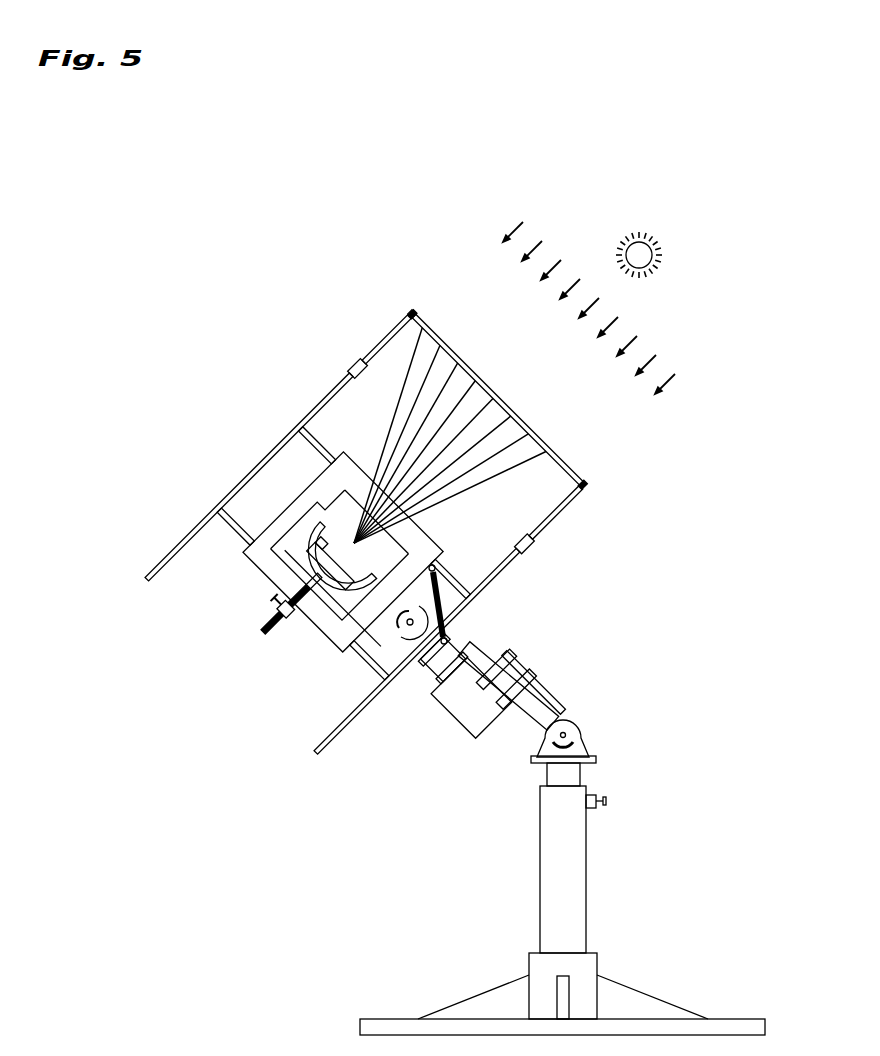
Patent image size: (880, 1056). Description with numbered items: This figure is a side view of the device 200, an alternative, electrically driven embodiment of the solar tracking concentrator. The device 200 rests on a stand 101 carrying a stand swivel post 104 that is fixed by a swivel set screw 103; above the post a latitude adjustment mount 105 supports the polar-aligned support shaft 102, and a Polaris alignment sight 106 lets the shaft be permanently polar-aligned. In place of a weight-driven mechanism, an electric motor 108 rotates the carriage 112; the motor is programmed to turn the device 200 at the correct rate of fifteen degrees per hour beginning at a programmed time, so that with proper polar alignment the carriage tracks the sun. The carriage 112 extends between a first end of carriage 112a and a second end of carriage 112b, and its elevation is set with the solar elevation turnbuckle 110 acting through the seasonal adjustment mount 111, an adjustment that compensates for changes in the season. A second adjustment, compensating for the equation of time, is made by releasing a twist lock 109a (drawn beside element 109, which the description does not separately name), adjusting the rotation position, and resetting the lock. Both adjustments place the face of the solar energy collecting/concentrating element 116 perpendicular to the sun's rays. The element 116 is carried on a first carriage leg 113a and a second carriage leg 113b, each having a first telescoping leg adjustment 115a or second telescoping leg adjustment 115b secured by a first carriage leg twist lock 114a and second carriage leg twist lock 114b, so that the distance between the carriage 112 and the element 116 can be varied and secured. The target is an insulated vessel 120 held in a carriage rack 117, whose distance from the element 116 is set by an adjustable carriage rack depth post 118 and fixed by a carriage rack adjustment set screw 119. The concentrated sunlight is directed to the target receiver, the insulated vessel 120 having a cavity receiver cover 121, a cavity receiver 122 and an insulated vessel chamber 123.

The device 200 is at (260, 275).
The stand 101 is at (571, 850).
The polar-aligned support shaft 102 is at (527, 722).
The swivel set screw 103 is at (603, 795).
The stand swivel post 104 is at (545, 775).
The latitude adjustment mount 105 is at (583, 742).
The Polaris alignment sight 106 is at (527, 667).
The motor 108 is at (473, 738).
The hinge 109 is at (393, 677).
The twist lock 109a is at (442, 670).
The solar elevation turnbuckle 110 is at (445, 620).
The seasonal adjustment mount 111 is at (383, 640).
The carriage 112 is at (268, 586).
The first end of carriage 112a is at (412, 312).
The second end of carriage 112b is at (228, 513).
The first carriage leg 113a is at (507, 560).
The second carriage leg 113b is at (308, 418).
The first carriage leg twist lock 114a is at (532, 543).
The second carriage leg twist lock 114b is at (352, 368).
The first telescoping leg adjustment 115a is at (573, 498).
The second telescoping leg adjustment 115b is at (385, 341).
The solar energy collecting/concentrating element 116 is at (633, 443).
The carriage rack 117 is at (322, 540).
The carriage rack depth post 118 is at (270, 631).
The carriage rack adjustment set screw 119 is at (292, 612).
The insulated vessel 120 is at (455, 552).
The cavity receiver cover 121 is at (470, 560).
The cavity receiver 122 is at (342, 546).
The insulated vessel chamber 123 is at (277, 572).